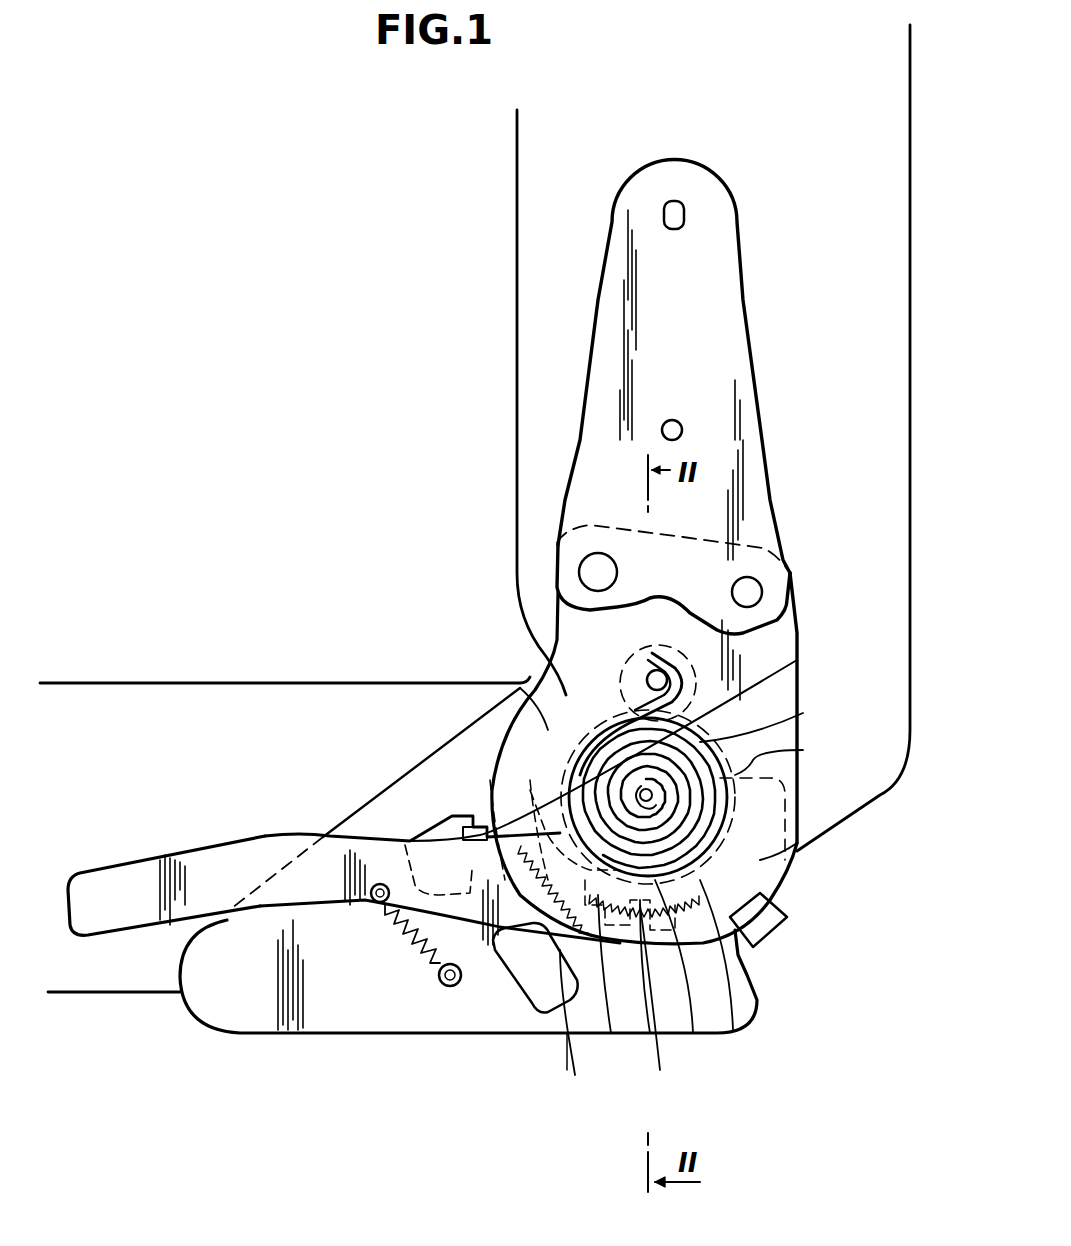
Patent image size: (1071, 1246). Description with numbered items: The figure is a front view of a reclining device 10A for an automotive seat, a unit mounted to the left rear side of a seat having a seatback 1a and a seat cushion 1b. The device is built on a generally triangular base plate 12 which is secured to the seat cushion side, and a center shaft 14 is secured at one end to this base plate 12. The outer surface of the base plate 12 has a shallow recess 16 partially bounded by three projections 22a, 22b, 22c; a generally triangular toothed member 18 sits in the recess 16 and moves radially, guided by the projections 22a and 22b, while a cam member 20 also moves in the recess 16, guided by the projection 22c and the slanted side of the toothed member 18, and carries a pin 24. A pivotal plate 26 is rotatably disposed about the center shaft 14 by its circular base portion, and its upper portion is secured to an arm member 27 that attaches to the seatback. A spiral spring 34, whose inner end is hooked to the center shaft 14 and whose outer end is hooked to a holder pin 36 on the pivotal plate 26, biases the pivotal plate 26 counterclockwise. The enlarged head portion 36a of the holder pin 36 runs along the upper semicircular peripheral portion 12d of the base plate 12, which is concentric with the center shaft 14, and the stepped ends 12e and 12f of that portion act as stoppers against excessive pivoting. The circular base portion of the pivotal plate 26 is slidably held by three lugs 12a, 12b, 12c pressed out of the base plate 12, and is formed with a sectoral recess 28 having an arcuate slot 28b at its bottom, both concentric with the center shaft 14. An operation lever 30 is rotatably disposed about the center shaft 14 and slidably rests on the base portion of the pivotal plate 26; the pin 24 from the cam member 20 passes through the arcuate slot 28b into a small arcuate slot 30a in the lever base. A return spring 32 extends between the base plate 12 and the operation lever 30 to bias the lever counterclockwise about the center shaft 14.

The reclining device 10A is at (746, 73).
The seatback 1a is at (882, 148).
The seat cushion 1b is at (122, 975).
The base plate 12 is at (376, 805).
The lug 12a is at (483, 820).
The lug 12b is at (574, 1026).
The lug 12c is at (797, 880).
The upper semicircular peripheral portion 12d is at (803, 713).
The stepped end 12e is at (803, 750).
The stepped end 12f is at (518, 682).
The center shaft 14 is at (663, 783).
The shallow recess 16 is at (560, 775).
The toothed member 18 is at (510, 930).
The cam member 20 is at (693, 1033).
The projection 22a is at (545, 838).
The projection 22b is at (608, 1033).
The projection 22c is at (742, 1033).
The pin 24 is at (659, 1003).
The pivotal plate 26 is at (797, 637).
The arm member 27 is at (745, 240).
The sectoral recess 28 is at (778, 950).
The arcuate slot 28b is at (763, 985).
The operation lever 30 is at (207, 857).
The small arcuate slot 30a is at (540, 935).
The return spring 32 is at (407, 933).
The spiral spring 34 is at (605, 700).
The holder pin 36 is at (645, 675).
The enlarged head portion 36a is at (545, 615).